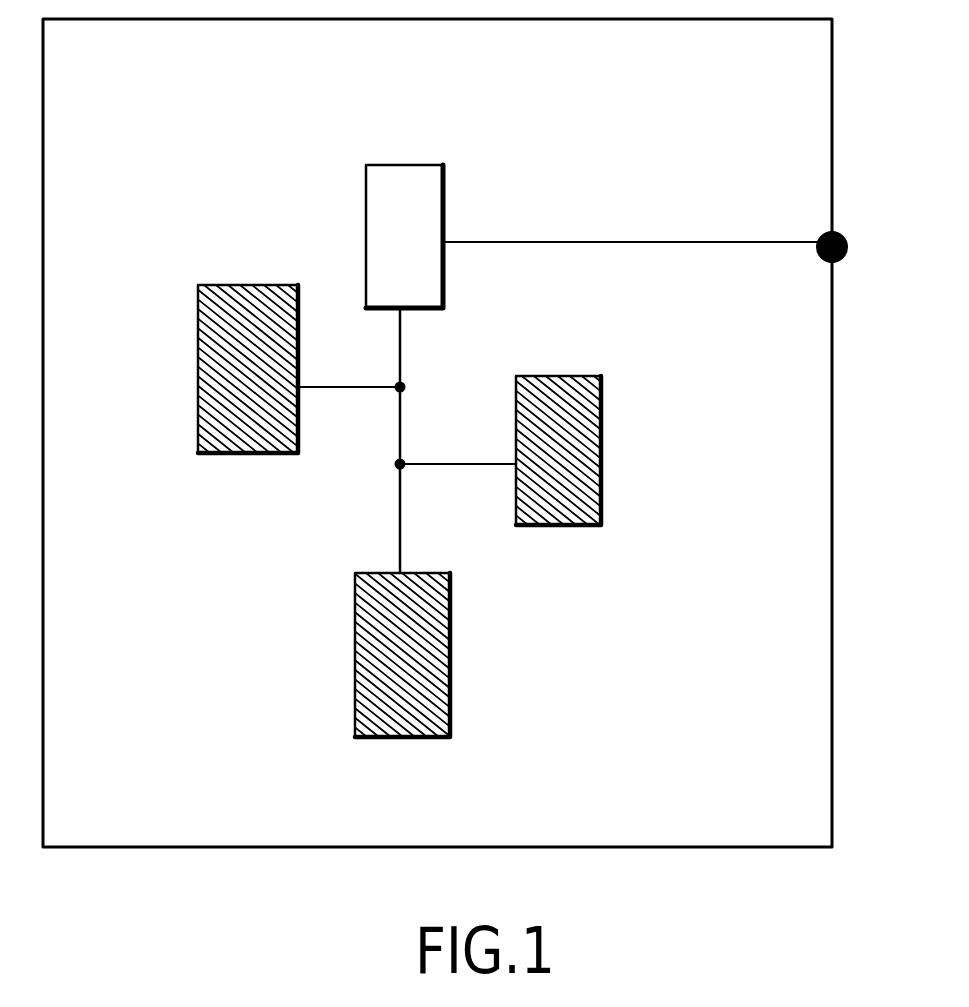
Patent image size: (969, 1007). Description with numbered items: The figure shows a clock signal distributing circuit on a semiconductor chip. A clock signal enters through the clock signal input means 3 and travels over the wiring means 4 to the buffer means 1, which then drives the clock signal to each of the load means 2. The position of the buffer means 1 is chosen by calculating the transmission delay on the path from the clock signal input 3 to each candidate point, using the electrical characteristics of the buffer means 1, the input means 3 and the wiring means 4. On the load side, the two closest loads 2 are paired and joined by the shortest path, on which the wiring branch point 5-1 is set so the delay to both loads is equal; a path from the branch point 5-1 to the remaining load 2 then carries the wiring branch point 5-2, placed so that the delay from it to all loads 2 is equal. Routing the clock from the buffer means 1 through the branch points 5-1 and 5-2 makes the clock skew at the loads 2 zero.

The buffer means 1 is at (395, 165).
The load means 2 is at (198, 404).
The clock signal input means 3 is at (838, 233).
The wiring means 4 is at (685, 242).
The wiring branch point 5-1 is at (398, 467).
The wiring branch point 5-2 is at (398, 385).